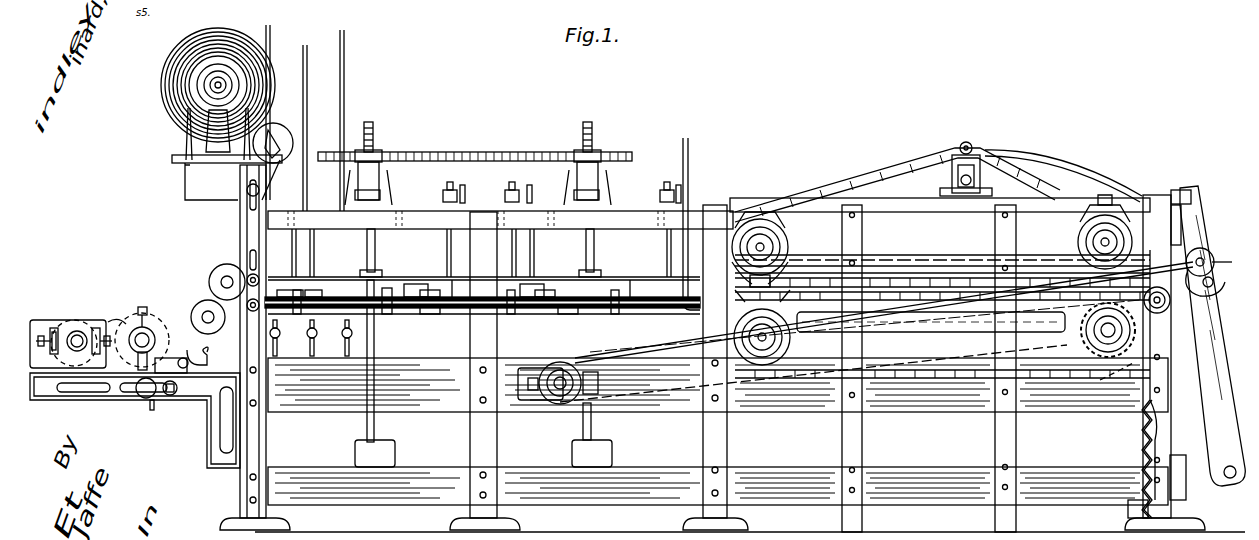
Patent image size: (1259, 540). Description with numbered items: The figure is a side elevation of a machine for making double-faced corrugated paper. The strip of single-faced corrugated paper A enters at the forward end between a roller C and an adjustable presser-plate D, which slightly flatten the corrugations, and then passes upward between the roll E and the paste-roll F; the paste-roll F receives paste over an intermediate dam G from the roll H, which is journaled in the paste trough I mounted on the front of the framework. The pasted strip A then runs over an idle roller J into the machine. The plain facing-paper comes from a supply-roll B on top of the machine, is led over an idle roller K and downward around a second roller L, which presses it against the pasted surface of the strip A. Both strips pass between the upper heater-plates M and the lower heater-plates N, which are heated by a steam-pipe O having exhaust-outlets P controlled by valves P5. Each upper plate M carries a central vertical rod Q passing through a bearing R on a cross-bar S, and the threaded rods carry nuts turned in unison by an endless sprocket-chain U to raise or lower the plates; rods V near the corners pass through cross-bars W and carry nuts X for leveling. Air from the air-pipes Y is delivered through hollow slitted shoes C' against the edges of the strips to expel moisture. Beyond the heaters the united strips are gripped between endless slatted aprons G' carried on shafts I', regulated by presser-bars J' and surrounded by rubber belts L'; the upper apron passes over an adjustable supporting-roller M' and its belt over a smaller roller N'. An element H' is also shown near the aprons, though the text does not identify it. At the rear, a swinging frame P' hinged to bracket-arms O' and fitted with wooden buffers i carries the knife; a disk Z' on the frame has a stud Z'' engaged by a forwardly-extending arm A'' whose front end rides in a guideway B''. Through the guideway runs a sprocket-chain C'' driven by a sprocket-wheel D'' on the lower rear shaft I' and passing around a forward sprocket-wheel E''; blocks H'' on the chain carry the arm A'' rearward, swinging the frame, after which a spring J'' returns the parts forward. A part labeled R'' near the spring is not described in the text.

The supply-roll B is at (212, 114).
The exhaust-outlets P is at (314, 118).
The idle roller K is at (292, 138).
The second roller L is at (239, 347).
The idle roller J is at (207, 349).
The roll H is at (71, 331).
The paste trough I is at (50, 322).
The intermediate dam G is at (117, 309).
The paste-roll F is at (158, 325).
The roll E is at (135, 413).
The roller C is at (129, 398).
The presser-plate D is at (164, 410).
The strip of single-faced corrugated paper A is at (137, 413).
The vertical rod Q is at (372, 134).
The endless sprocket-chain U is at (507, 146).
The bearing R is at (488, 184).
The transverse cross-bar S is at (410, 192).
The cross-bar W is at (472, 196).
The nuts X is at (440, 195).
The steam-pipe O is at (696, 224).
The vertical rod V is at (298, 254).
The upper heater-plates M is at (480, 276).
The hollow shoes C' is at (482, 294).
The valves P5 is at (298, 322).
The lower heater-plates N is at (494, 323).
The air-pipe Y is at (454, 314).
The second sprocket-wheel E'' is at (565, 401).
The sprocket-chain C'' is at (884, 312).
The cleats or blocks H'' is at (813, 386).
The forwardly-extending arm A'' is at (865, 298).
The shafts I' is at (932, 280).
The sprocket-wheel D'' is at (1093, 330).
The guideway B'' is at (931, 331).
The endless aprons G' is at (942, 284).
The rail H' is at (942, 264).
The presser-bars J' is at (942, 258).
The second smaller roller N' is at (977, 133).
The supporting-roller M' is at (977, 164).
The endless rubber belt L' is at (1083, 324).
The wooden buffers i is at (1188, 200).
The stud Z'' is at (1209, 243).
The disk Z' is at (1217, 264).
The swinging frame P' is at (1195, 300).
The bracket-arms O' is at (1212, 346).
The spring R'' is at (1132, 459).
The spring J'' is at (1127, 506).